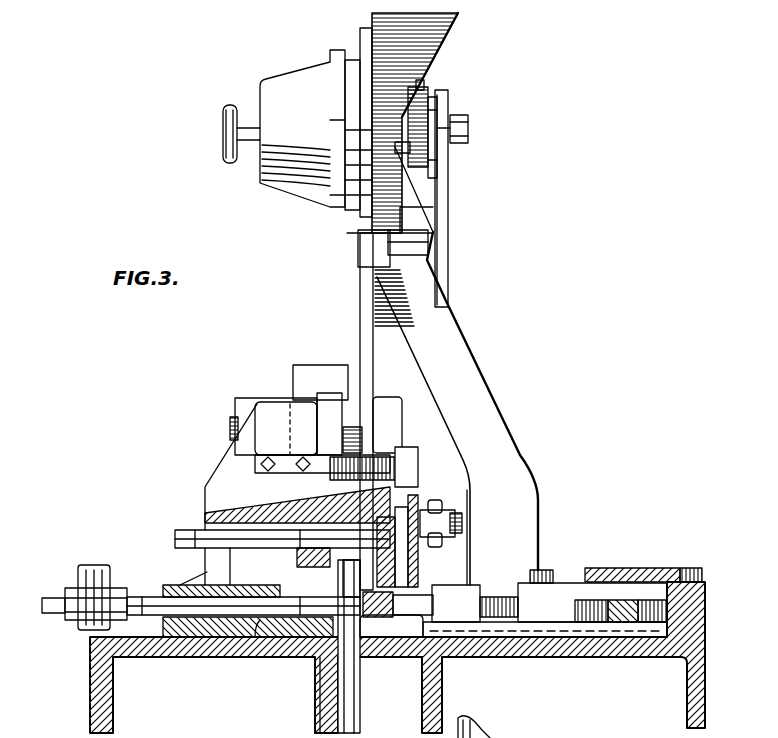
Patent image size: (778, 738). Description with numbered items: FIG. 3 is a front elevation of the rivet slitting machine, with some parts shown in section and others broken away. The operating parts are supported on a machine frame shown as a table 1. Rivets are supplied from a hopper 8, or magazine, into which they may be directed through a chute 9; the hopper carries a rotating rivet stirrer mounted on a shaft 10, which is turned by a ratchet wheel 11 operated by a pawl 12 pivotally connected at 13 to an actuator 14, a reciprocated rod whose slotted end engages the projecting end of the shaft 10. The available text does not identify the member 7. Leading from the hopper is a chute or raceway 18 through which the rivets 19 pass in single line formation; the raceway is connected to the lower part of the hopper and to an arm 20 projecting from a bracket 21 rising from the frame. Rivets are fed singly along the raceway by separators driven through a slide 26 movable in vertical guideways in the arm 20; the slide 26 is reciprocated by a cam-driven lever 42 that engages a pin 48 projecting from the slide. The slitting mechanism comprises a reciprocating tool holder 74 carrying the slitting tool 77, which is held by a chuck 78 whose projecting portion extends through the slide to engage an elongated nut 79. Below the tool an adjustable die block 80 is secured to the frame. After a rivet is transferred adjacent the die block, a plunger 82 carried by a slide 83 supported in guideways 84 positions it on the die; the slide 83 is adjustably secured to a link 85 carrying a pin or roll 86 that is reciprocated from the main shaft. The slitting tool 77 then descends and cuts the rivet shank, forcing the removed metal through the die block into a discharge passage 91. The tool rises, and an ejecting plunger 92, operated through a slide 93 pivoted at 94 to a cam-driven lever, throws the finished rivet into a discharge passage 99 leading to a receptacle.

The table 1 is at (582, 655).
The arm strap 7 is at (470, 368).
The hopper 8 is at (318, 90).
The chute 9 is at (432, 36).
The shaft 10 is at (470, 125).
The ratchet wheel 11 is at (437, 95).
The pawl 12 is at (420, 100).
The pivotal connection 13 is at (448, 175).
The actuator 14 is at (448, 238).
The chute or raceway 18 is at (358, 300).
The rivets 19 is at (362, 646).
The arm 20 is at (312, 457).
The bracket 21 is at (212, 497).
The slide 26 is at (405, 557).
The lever 42 is at (436, 500).
The pin 48 is at (445, 520).
The tool holder 74 is at (312, 368).
The slitting tool 77 is at (343, 578).
The chuck 78 is at (295, 556).
The elongated nut 79 is at (215, 535).
The die block 80 is at (287, 657).
The plunger 82 is at (388, 622).
The slide 83 is at (470, 595).
The guideways 84 is at (480, 622).
The link 85 is at (560, 600).
The pin or roll 86 is at (648, 600).
The discharge passage 91 is at (315, 680).
The ejecting plunger 92 is at (205, 586).
The slide 93 is at (160, 602).
The pivot 94 is at (82, 575).
The discharge passage 99 is at (395, 694).